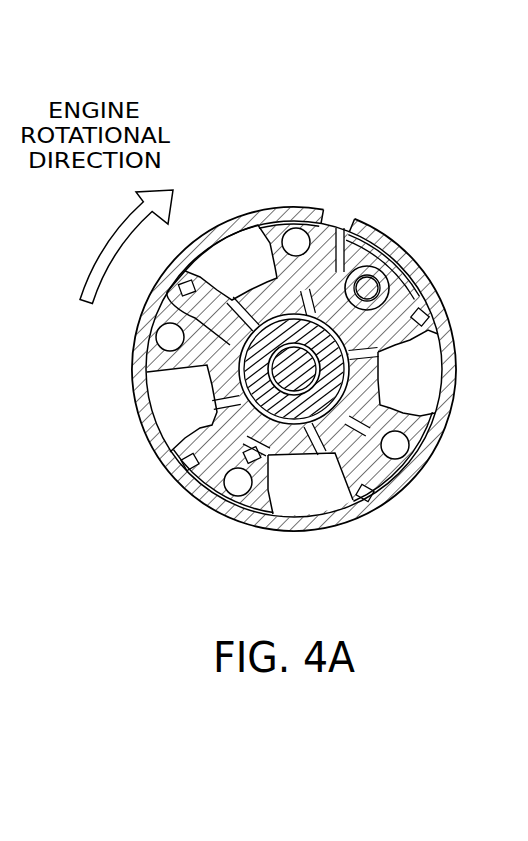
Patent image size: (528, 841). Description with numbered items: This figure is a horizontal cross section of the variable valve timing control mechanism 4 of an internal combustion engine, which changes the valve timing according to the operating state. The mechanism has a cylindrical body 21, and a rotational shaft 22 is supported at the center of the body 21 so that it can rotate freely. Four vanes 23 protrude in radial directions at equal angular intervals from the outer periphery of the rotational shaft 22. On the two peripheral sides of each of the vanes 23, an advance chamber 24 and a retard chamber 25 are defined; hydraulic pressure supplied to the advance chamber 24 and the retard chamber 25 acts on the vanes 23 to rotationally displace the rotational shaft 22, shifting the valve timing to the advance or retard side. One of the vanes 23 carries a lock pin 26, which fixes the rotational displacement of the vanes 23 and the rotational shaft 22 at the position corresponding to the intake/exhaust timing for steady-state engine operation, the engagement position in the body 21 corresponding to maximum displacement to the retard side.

The variable valve timing control mechanism 4 is at (253, 182).
The cylindrical body 21 is at (291, 207).
The rotational shaft 22 is at (208, 416).
The vanes 23 is at (212, 282).
The advance chamber 24 is at (345, 225).
The retard chamber 25 is at (407, 387).
The lock pin 26 is at (365, 268).